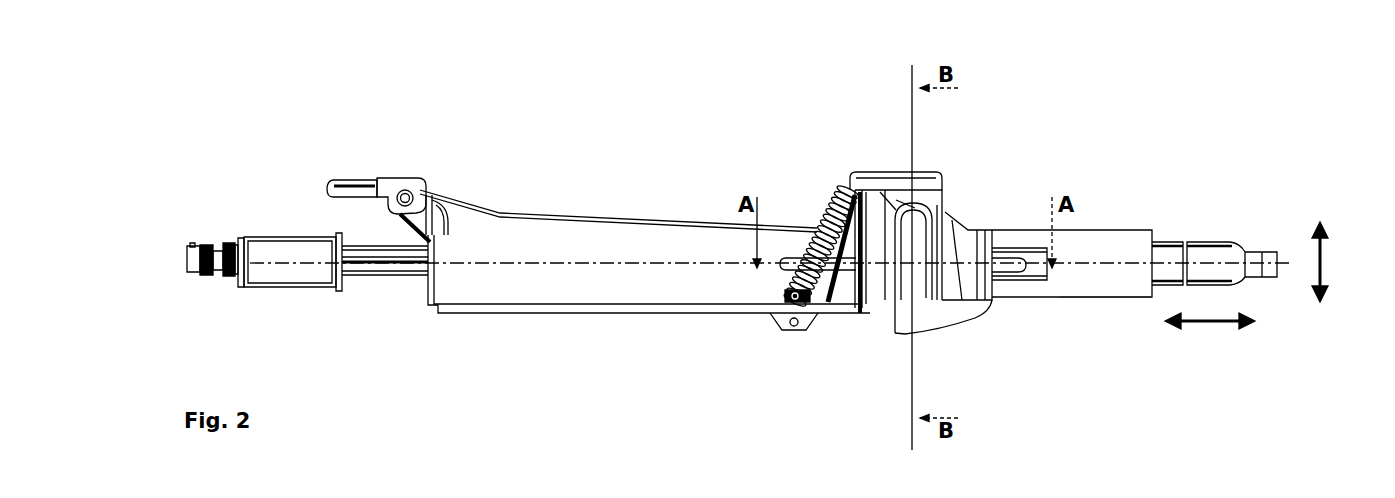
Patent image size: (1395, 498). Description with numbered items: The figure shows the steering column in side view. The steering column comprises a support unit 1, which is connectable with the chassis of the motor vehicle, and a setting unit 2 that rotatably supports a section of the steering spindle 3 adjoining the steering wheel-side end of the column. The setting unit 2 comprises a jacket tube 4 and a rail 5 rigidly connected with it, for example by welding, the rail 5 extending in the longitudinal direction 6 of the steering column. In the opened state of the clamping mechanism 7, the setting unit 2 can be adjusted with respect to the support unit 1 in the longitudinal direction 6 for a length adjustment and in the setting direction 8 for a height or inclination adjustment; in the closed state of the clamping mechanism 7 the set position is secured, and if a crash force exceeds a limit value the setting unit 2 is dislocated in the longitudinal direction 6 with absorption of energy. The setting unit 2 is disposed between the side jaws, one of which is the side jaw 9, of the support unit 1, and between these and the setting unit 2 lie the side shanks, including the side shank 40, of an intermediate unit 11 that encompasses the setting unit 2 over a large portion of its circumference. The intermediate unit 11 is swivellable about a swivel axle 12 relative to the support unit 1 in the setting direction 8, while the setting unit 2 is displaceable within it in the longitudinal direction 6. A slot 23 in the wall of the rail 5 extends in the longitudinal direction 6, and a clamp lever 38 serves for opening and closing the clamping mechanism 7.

The support unit 1 is at (947, 176).
The setting unit 2 is at (1100, 228).
The steering spindle 3 is at (1212, 246).
The jacket tube 4 is at (1097, 295).
The rail 5 is at (1022, 283).
The longitudinal direction 6 is at (1198, 326).
The clamping mechanism 7 is at (876, 174).
The setting direction 8 is at (1325, 260).
The side jaw 9 is at (880, 310).
The intermediate unit 11 is at (975, 226).
The swivel axle 12 is at (412, 197).
The slot 23 is at (1005, 285).
The clamp lever 38 is at (903, 320).
The side shank 40 is at (955, 290).